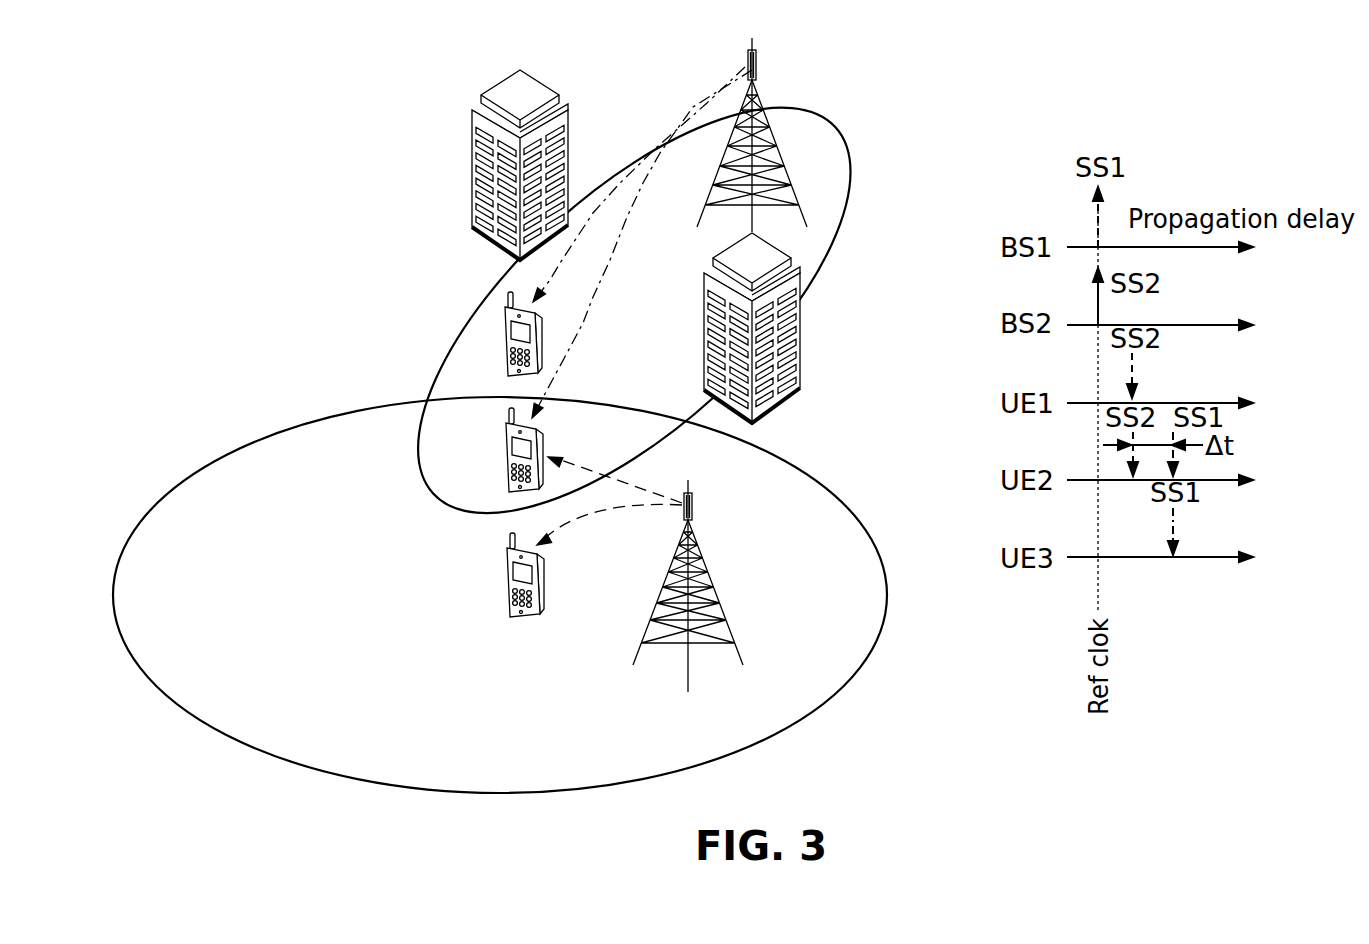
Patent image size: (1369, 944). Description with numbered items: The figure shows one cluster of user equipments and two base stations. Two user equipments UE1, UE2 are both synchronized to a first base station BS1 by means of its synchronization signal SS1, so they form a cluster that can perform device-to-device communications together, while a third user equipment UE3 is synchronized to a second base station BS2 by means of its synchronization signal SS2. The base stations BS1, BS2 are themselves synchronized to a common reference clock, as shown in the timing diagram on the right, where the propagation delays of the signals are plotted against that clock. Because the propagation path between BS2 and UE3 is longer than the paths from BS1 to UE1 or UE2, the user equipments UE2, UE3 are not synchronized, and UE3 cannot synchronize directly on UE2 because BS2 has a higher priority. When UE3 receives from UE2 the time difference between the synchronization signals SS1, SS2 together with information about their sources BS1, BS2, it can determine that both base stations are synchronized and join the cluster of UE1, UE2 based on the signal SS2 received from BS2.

The first base station BS1 is at (790, 68).
The second base station BS2 is at (698, 528).
The first user equipment UE1 is at (506, 341).
The second user equipment UE2 is at (506, 477).
The third user equipment UE3 is at (506, 593).
The first synchronization signal SS1 is at (642, 242).
The second synchronization signal SS2 is at (611, 498).